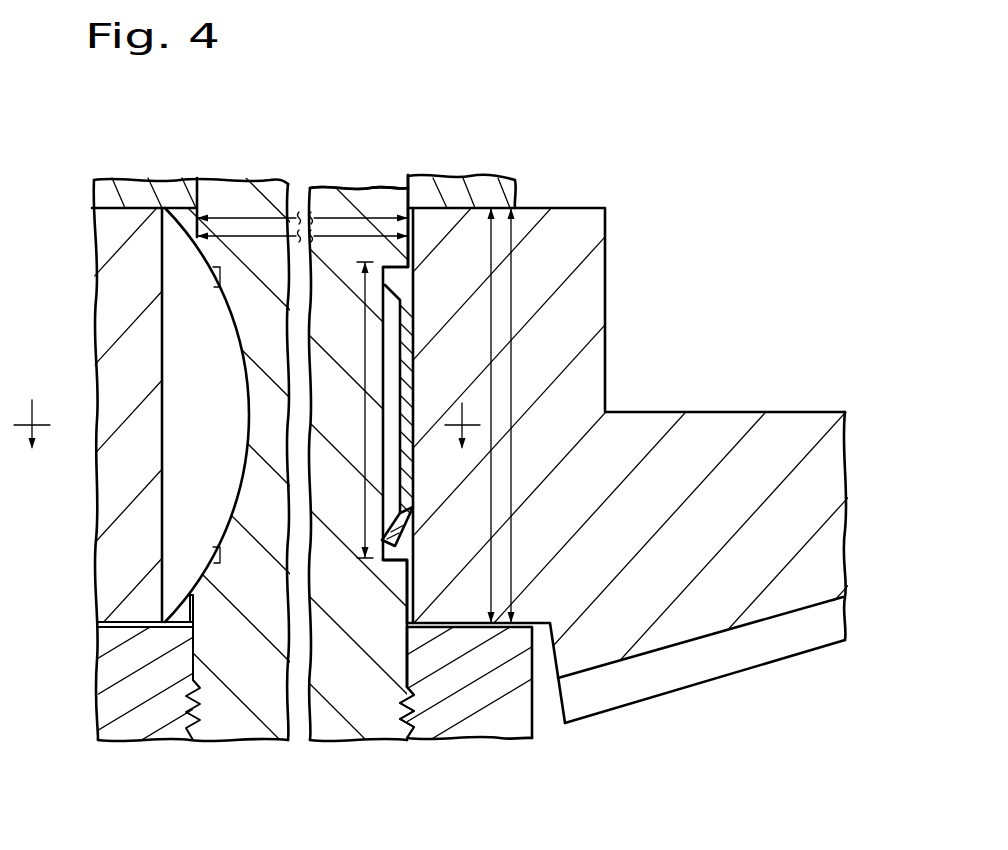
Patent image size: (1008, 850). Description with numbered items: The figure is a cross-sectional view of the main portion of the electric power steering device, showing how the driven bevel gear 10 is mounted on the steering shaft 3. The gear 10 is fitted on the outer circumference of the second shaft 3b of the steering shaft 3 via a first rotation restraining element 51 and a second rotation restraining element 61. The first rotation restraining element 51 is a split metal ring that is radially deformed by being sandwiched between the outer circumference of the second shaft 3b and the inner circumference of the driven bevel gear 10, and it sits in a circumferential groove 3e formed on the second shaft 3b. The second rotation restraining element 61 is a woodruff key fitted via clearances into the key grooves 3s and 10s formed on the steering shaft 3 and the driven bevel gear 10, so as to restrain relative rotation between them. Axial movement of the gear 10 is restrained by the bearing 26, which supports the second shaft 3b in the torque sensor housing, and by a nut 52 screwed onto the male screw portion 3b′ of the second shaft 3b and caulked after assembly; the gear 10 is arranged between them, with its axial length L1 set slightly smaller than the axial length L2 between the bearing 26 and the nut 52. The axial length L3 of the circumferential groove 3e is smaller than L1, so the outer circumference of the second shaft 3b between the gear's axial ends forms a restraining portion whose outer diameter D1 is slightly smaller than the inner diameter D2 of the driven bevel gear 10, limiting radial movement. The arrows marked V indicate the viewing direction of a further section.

The driven bevel gear 10 is at (646, 688).
The bearing 26 is at (478, 190).
The key groove 3s is at (224, 503).
The second rotation restraining element 61 is at (180, 328).
The key groove 10s is at (184, 200).
The steering shaft 3 is at (382, 200).
The nut 52 is at (496, 730).
The first rotation restraining element 51 is at (410, 377).
The second shaft 3b is at (338, 202).
The circumferential groove 3e is at (394, 556).
The male screw portion 3b′ is at (411, 722).
The outer diameter of the restraining portion D1 is at (252, 238).
The inner diameter of the driven bevel gear D2 is at (249, 216).
The axial length of the driven bevel gear L1 is at (490, 494).
The axial length between the bearing and the nut L2 is at (513, 546).
The axial length of the circumferential groove L3 is at (365, 406).
The optical axis direction V is at (247, 444).